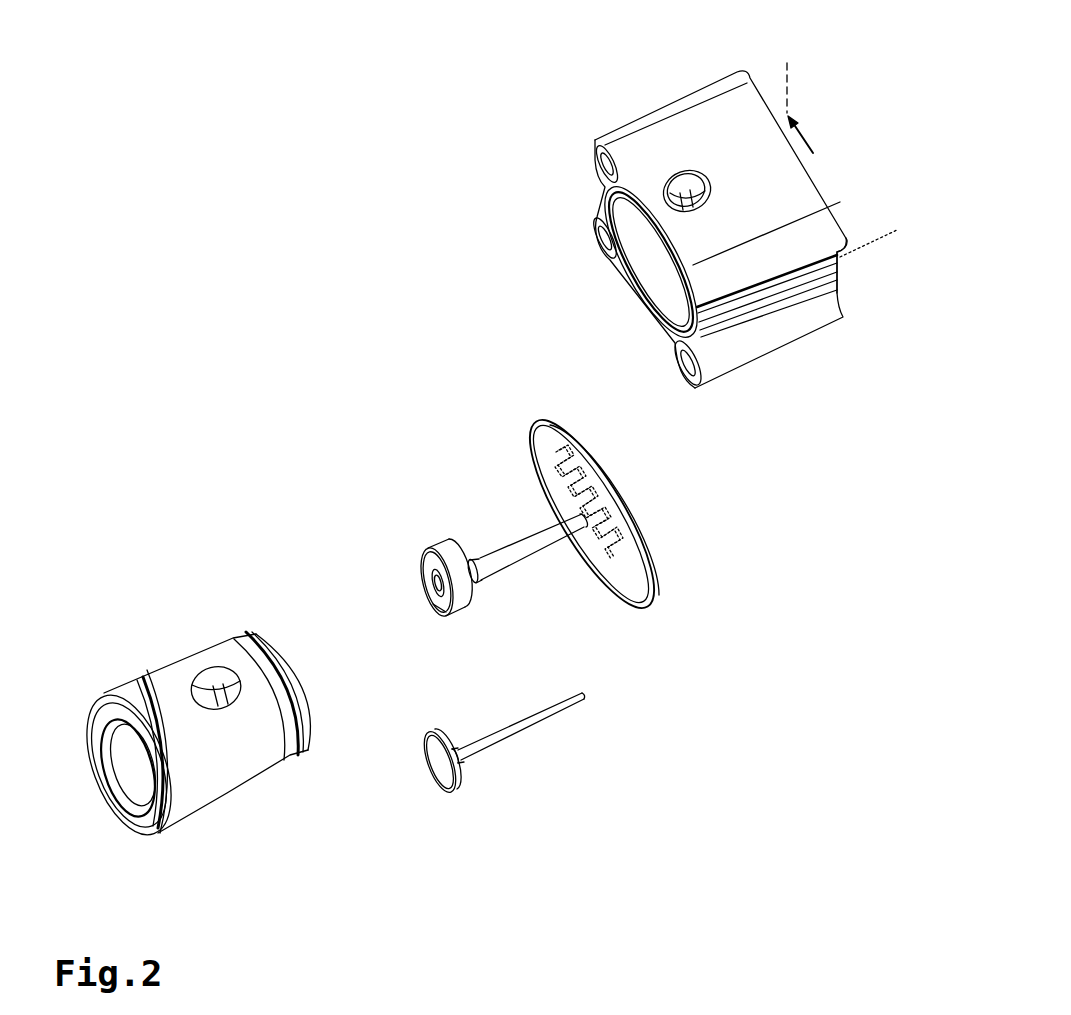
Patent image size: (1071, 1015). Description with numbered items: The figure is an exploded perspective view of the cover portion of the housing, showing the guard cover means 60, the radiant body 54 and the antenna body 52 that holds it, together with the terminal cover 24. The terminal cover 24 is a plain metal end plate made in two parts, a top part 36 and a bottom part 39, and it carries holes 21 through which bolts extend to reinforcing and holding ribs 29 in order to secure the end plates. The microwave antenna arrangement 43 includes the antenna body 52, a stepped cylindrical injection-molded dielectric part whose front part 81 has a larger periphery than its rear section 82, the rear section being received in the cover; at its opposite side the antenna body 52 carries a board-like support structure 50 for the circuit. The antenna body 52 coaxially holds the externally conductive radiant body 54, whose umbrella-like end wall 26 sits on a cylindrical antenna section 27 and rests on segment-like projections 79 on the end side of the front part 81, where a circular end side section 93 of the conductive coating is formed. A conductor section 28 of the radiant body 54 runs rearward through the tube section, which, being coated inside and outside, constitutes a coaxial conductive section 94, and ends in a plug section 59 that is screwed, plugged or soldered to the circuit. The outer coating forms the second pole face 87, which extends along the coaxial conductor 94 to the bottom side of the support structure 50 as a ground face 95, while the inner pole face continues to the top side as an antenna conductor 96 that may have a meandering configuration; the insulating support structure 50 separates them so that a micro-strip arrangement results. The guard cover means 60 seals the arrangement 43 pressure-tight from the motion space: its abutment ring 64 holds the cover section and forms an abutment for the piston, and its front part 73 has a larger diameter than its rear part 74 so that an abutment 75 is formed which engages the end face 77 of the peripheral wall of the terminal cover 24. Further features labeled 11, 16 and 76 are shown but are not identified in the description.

The valve 11 is at (561, 141).
The hole 16 is at (700, 180).
The holes 21 is at (613, 247).
The terminal cover 24 is at (737, 381).
The end wall 26 is at (443, 792).
The cylindrical antenna section 27 is at (460, 776).
The conductor section 28 is at (478, 752).
The reinforcing and holding ribs 29 is at (702, 88).
The top part 36 is at (827, 233).
The bottom part 39 is at (833, 303).
The microwave antenna arrangement 43 is at (456, 721).
The support structure 50 is at (602, 514).
The antenna body 52 is at (414, 542).
The radiant body 54 is at (425, 746).
The plug section 59 is at (585, 696).
The guard cover means 60 is at (174, 653).
The abutment ring 64 is at (93, 694).
The front part 73 is at (143, 679).
The rear part 74 is at (683, 362).
The abutment 75 is at (233, 793).
The rim 76 is at (652, 312).
The end face 77 is at (640, 293).
The segment-like projections 79 is at (440, 612).
The front part 81 is at (473, 610).
The rear section 82 is at (478, 580).
The second pole face 87 is at (552, 467).
The circular end side section 93 is at (422, 565).
The coaxial conductive section 94 is at (518, 543).
The ground face 95 is at (560, 500).
The antenna conductor 96 is at (630, 544).